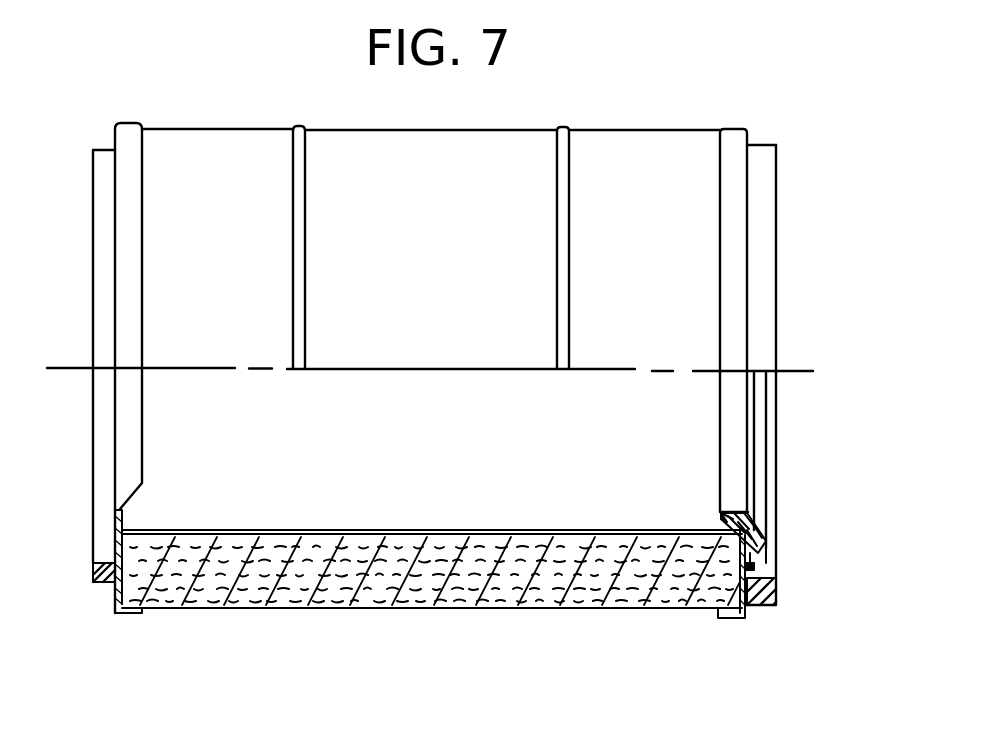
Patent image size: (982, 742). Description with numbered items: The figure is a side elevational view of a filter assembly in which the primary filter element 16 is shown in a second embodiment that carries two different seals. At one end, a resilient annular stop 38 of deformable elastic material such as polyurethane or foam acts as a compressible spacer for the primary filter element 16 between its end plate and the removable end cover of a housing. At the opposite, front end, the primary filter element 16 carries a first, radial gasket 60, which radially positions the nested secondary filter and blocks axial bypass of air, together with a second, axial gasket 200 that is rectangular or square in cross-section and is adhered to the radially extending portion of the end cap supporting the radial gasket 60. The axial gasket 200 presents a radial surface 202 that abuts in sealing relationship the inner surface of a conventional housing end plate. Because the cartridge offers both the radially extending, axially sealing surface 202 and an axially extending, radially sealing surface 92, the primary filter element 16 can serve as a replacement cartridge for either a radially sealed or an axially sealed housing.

The primary air filter element 16 is at (435, 598).
The resilient annular stop 38 is at (92, 581).
The radial gasket 60 is at (756, 541).
The exteriorly facing surface 92 is at (732, 460).
The axial gasket 200 is at (776, 588).
The radial surface 202 is at (777, 599).